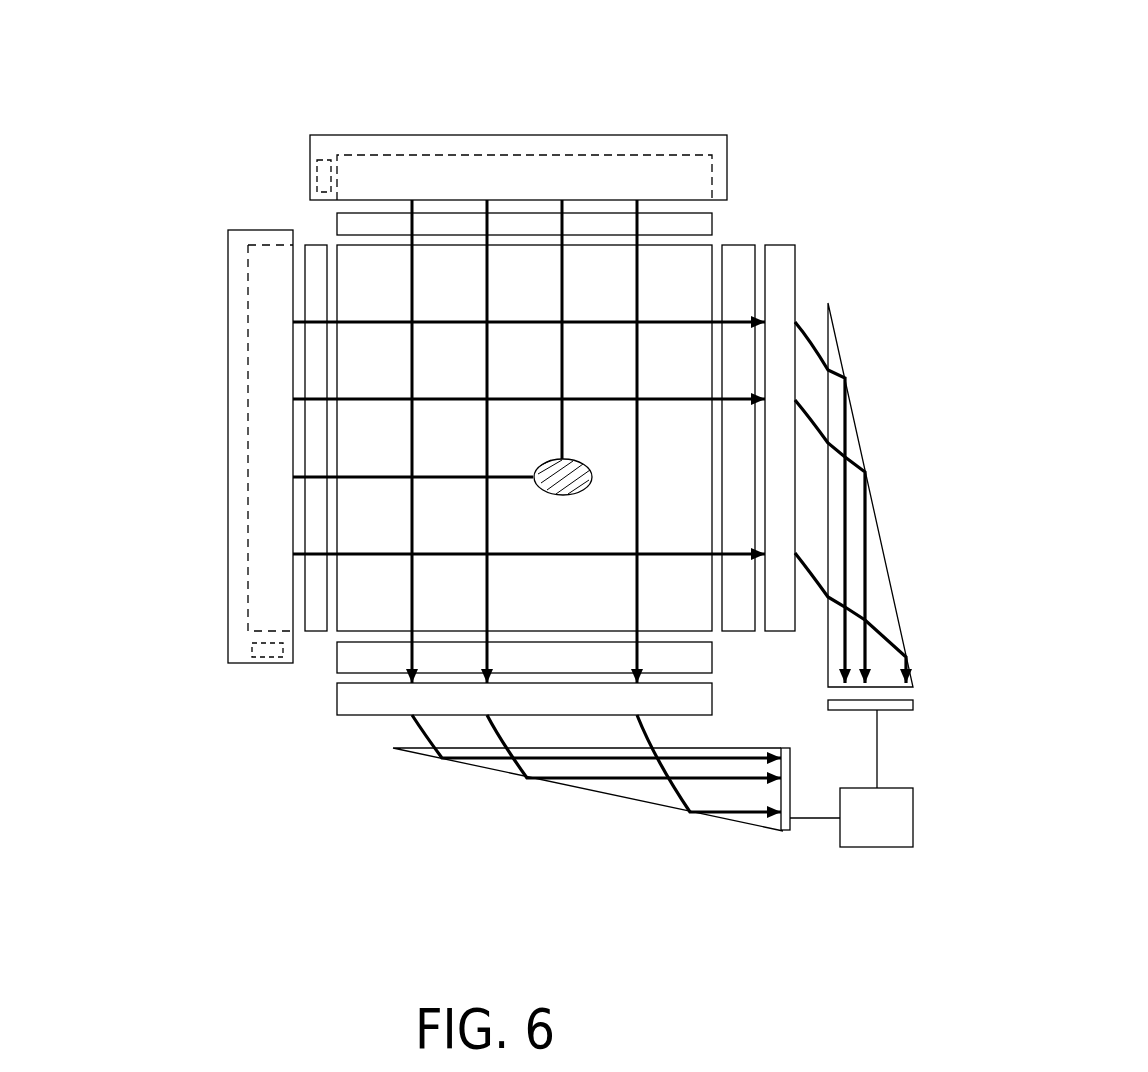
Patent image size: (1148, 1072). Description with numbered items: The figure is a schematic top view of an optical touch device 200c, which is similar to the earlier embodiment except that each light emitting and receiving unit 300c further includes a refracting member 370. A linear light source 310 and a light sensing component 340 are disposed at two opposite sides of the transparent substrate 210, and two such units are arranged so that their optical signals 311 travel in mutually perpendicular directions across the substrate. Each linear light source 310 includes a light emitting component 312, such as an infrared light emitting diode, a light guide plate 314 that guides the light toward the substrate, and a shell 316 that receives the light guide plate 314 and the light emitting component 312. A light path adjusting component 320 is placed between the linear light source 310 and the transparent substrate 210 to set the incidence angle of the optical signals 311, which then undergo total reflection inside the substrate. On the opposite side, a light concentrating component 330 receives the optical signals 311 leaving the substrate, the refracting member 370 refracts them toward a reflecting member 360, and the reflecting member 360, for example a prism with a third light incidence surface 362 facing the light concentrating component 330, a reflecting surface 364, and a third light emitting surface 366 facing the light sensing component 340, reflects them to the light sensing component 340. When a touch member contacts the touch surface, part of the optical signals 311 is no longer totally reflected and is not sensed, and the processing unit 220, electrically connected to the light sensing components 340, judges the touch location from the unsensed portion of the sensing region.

The light emitting and receiving unit 300c is at (798, 162).
The optical touch device 200c is at (890, 962).
The transparent substrate 210 is at (705, 253).
The processing unit 220 is at (873, 840).
The linear light source 310 is at (191, 449).
The optical signals 311 is at (315, 322).
The light emitting component 312 is at (217, 652).
The light guide plate 314 is at (248, 610).
The shell 316 is at (228, 571).
The light path adjusting component 320 is at (313, 632).
The light concentrating component 330 is at (352, 674).
The refracting member 370 is at (703, 703).
The light sensing component 340 is at (792, 753).
The reflecting member 360 is at (497, 766).
The third light incidence surface 362 is at (603, 748).
The reflecting surface 364 is at (676, 810).
The third light emitting surface 366 is at (790, 831).